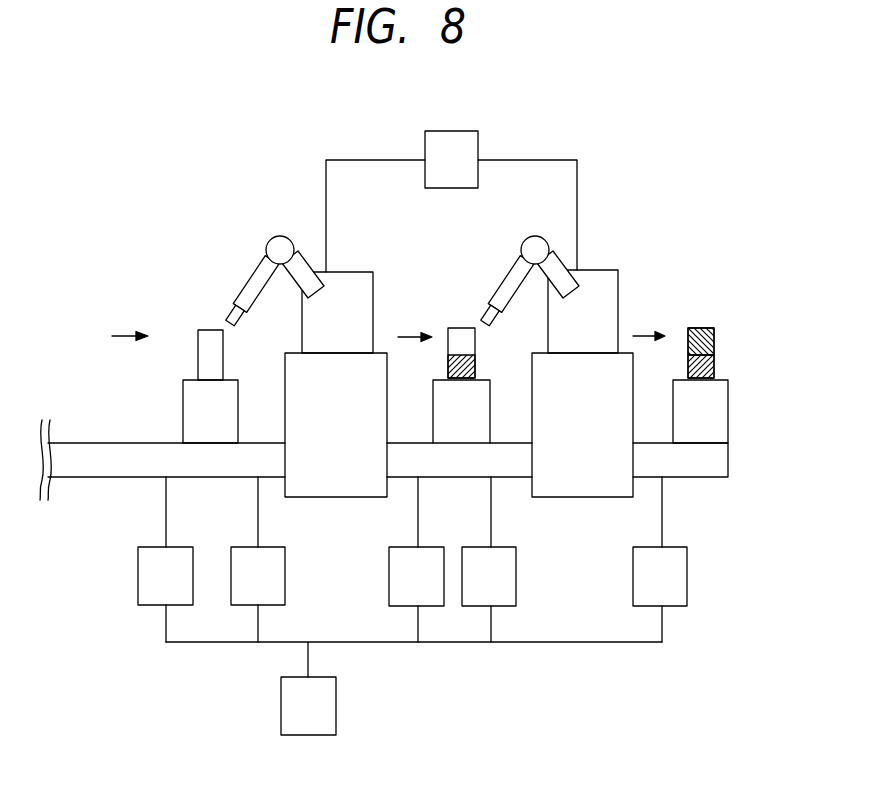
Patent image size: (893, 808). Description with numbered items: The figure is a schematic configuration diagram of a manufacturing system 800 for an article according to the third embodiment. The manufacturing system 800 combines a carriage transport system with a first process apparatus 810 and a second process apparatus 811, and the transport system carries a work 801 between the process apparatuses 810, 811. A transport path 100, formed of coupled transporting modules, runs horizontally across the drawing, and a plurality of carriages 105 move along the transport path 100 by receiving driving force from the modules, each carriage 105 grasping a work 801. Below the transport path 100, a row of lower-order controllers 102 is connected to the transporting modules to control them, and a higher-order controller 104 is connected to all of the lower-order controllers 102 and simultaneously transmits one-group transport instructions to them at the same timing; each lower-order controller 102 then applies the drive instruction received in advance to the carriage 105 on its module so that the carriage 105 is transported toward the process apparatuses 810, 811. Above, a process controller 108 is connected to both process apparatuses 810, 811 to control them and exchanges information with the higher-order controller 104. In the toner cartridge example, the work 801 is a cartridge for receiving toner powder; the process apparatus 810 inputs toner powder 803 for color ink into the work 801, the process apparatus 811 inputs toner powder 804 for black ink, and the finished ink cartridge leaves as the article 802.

The transport path 100 is at (107, 471).
The lower-order controller 102 is at (145, 585).
The higher-order controller 104 is at (288, 706).
The carriage 105 is at (230, 385).
The process controller 108 is at (450, 138).
The manufacturing system 800 is at (166, 190).
The work 801 is at (212, 337).
The article 802 is at (713, 314).
The toner powder for color ink 803 is at (448, 367).
The toner powder for black ink 804 is at (688, 333).
The process apparatus 810 is at (353, 278).
The process apparatus 811 is at (601, 278).